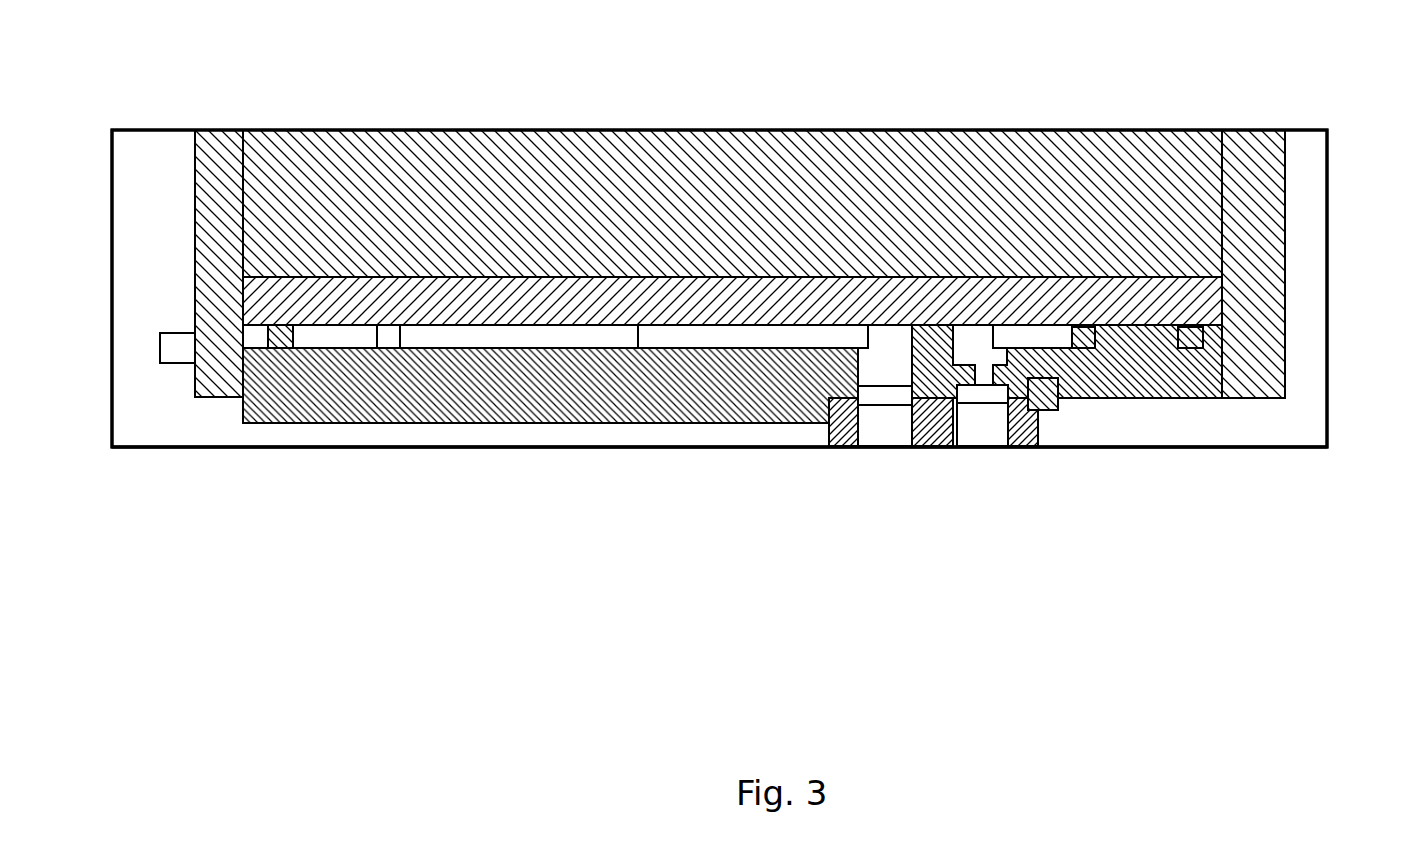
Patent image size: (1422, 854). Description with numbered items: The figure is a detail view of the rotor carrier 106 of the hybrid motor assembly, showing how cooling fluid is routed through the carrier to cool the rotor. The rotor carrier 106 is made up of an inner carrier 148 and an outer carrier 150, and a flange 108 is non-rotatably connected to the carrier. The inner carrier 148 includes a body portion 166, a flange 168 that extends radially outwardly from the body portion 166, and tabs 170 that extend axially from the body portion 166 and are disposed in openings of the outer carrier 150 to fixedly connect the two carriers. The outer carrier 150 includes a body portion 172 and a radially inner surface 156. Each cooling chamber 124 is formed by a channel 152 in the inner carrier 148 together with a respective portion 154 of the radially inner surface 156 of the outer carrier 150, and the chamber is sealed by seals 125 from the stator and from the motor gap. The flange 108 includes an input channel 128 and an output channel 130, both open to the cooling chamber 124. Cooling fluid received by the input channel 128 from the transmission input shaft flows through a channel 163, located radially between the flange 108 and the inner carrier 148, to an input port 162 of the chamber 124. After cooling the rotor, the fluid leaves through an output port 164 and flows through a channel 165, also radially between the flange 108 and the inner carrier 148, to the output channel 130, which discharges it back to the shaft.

The rotor carrier 106 is at (1340, 263).
The flange 108 is at (1050, 424).
The cooling chamber 124 is at (492, 312).
The seals 125 is at (282, 345).
The input channel 128 is at (992, 428).
The output channel 130 is at (880, 425).
The inner carrier 148 is at (1290, 432).
The outer carrier 150 is at (142, 182).
The channel 152 is at (548, 342).
The portion of radially inner surface 154 is at (587, 325).
The radially inner surface 156 is at (738, 312).
The input port 162 is at (972, 348).
The channel 163 is at (978, 393).
The output port 164 is at (893, 353).
The channel 165 is at (893, 395).
The body portion 166 is at (422, 400).
The flange 168 is at (1305, 192).
The tabs 170 is at (160, 348).
The body portion 172 is at (333, 277).